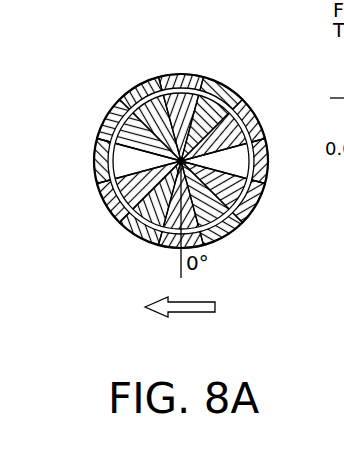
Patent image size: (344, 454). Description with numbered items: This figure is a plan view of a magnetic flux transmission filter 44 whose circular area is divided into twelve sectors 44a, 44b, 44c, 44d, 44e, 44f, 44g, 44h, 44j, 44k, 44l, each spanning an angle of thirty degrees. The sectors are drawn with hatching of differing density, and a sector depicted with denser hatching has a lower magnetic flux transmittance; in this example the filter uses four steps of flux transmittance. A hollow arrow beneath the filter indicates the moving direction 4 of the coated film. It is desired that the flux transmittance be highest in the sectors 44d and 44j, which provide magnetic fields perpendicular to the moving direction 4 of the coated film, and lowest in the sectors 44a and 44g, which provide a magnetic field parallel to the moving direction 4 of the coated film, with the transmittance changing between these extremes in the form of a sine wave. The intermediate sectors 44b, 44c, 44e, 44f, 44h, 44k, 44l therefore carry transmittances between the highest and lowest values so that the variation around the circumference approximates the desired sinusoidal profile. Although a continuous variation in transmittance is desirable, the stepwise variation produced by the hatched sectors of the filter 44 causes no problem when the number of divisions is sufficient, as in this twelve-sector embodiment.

The magnetic flux transmission filter 44 is at (201, 76).
The sector 44a is at (162, 250).
The sector 44b is at (140, 240).
The sector 44c is at (247, 122).
The sector 44d is at (98, 150).
The sector 44e is at (112, 108).
The sector 44f is at (141, 82).
The sector 44g is at (172, 72).
The sector 44h is at (228, 93).
The sector 44j is at (260, 168).
The sector 44k is at (246, 213).
The sector 44l is at (222, 240).
The moving direction of the coated film 4 is at (190, 318).